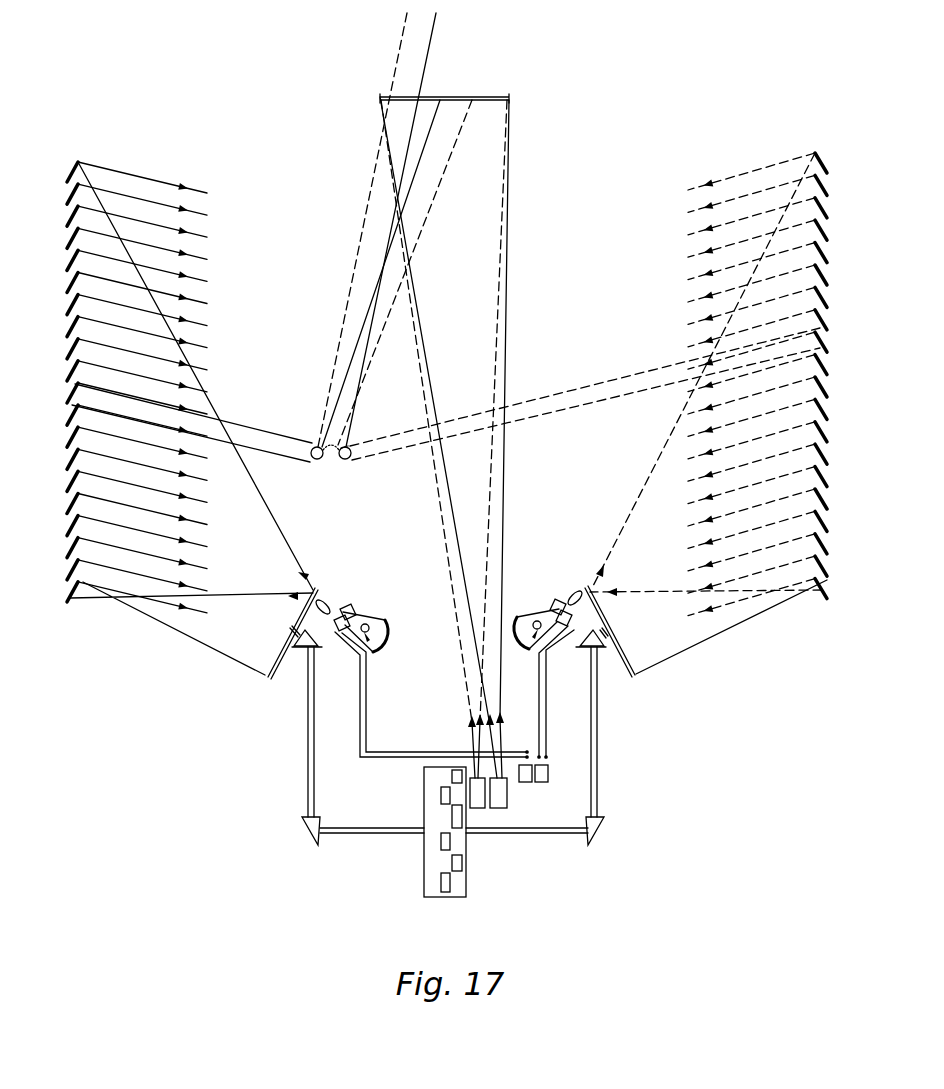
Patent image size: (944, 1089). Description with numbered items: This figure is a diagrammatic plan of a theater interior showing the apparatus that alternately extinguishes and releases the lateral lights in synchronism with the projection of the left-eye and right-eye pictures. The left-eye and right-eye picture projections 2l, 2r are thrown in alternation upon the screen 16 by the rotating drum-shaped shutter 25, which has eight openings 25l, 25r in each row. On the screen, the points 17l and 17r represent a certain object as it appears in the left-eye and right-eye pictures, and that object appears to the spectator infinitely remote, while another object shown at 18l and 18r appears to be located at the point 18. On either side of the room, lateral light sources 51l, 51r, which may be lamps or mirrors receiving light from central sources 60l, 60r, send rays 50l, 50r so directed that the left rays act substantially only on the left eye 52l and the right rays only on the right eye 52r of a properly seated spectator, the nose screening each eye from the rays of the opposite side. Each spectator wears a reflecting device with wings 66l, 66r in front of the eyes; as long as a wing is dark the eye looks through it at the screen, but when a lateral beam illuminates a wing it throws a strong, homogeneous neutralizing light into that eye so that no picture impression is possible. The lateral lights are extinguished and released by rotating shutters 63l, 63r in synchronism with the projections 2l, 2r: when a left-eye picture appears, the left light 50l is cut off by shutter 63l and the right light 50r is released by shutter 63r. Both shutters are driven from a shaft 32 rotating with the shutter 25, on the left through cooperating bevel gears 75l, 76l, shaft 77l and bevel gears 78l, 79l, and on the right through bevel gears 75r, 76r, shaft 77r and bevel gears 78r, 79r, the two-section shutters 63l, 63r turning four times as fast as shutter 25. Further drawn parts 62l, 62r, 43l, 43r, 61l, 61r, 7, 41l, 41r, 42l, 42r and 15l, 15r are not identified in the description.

The screen 16 is at (512, 96).
The left-eye picture point 17l is at (380, 96).
The right-eye picture point 17r is at (424, 97).
The apparent object location point 18 is at (362, 230).
The left-eye picture point of second object 18l is at (474, 102).
The right-eye picture point of second object 18r is at (436, 102).
The left-eye picture projection 2l is at (470, 729).
The right-eye picture projection 2r is at (500, 728).
The left lateral light rays 50l is at (173, 418).
The right lateral light rays 50r is at (723, 413).
The left lateral light source 51l is at (68, 391).
The right lateral light source 51r is at (829, 372).
The left eye 52l is at (199, 437).
The right eye 52r is at (579, 409).
The left wing of reflecting device 66l is at (316, 447).
The right wing of reflecting device 66r is at (350, 447).
The left lens 62l is at (328, 599).
The right lens 62r is at (572, 595).
The left beam splitter 43l is at (352, 610).
The right beam splitter 43r is at (551, 610).
The left central light source 60l is at (371, 625).
The right central light source 60r is at (532, 622).
The left reflector 61l is at (371, 639).
The right reflector 61r is at (533, 638).
The left rotating shutter 63l is at (280, 638).
The right rotating shutter 63r is at (626, 637).
The bevel gear 79l is at (307, 634).
The bevel gear 79r is at (592, 634).
The bevel gear 78l is at (300, 650).
The bevel gear 78r is at (600, 651).
The light guide 7 is at (320, 666).
The left shaft 77l is at (307, 747).
The right shaft 77r is at (605, 732).
The bevel gear 76l is at (302, 822).
The bevel gear 76r is at (605, 820).
The bevel gear 75l is at (312, 847).
The bevel gear 75r is at (590, 845).
The shaft 32 is at (386, 832).
The left fiber conduit 41l is at (358, 708).
The right fiber conduit 41r is at (548, 690).
The left detector 42l is at (521, 785).
The right detector 42r is at (549, 782).
The left projector 15l is at (476, 803).
The right projector 15r is at (504, 803).
The drum-shaped rotating shutter 25 is at (448, 843).
The left openings of shutter 25l is at (437, 848).
The right openings of shutter 25r is at (468, 864).